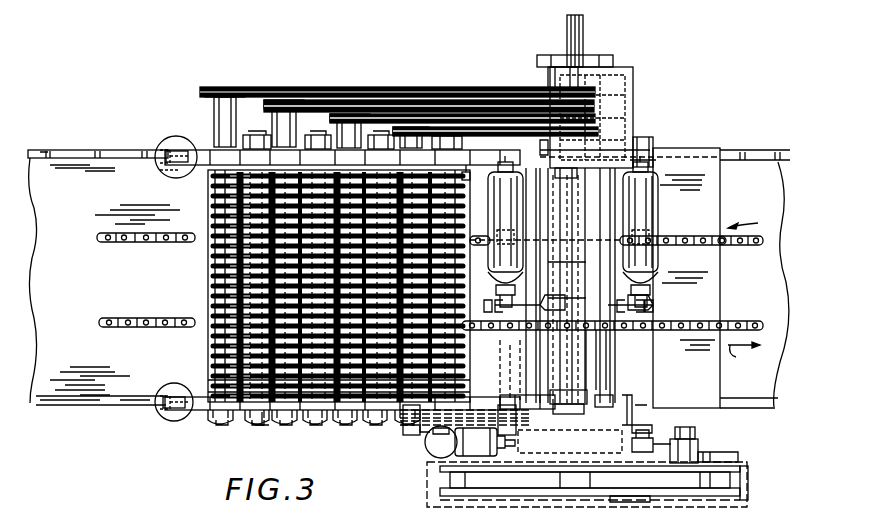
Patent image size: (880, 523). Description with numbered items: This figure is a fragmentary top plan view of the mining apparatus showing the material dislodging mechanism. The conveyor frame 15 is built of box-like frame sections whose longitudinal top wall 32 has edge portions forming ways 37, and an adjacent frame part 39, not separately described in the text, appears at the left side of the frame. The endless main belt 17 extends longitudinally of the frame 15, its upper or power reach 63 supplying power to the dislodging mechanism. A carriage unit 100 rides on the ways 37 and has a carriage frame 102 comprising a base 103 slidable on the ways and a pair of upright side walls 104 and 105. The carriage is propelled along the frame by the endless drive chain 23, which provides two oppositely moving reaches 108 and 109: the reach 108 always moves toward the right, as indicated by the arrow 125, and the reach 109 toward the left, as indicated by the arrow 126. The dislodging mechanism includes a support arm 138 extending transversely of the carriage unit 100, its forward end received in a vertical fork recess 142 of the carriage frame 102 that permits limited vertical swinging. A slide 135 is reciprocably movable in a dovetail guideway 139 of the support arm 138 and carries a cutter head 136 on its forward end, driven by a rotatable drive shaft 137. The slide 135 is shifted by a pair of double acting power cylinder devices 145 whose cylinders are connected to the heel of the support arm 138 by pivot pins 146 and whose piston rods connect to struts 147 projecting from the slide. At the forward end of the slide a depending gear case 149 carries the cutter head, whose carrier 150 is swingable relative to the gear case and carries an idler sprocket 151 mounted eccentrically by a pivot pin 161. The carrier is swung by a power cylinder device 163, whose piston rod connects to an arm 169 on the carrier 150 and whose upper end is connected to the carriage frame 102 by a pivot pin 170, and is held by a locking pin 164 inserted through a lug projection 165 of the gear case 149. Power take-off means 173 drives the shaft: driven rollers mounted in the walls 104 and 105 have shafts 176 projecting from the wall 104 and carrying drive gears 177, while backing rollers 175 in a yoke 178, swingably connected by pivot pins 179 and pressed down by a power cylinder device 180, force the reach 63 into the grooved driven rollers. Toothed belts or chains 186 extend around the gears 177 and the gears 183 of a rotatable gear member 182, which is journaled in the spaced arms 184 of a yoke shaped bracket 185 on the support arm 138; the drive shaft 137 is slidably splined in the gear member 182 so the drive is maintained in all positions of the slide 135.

The conveyor frame 15 is at (80, 152).
The endless main belt 17 is at (203, 346).
The endless drive chain 23 is at (700, 242).
The top wall 32 is at (42, 350).
The ways 37 is at (58, 152).
The conveyor side wall 39 is at (30, 269).
The upper or power reach 63 is at (208, 376).
The carriage unit 100 is at (668, 150).
The carriage frame 102 is at (214, 416).
The base 103 is at (701, 274).
The side wall 104 is at (493, 198).
The side wall 105 is at (458, 408).
The chain reach 108 is at (730, 322).
The chain reach 109 is at (728, 246).
The arrow 125 is at (751, 354).
The arrow 126 is at (751, 221).
The slide 135 is at (604, 378).
The cutter head 136 is at (447, 480).
The drive shaft 137 is at (570, 346).
The support arm 138 is at (608, 346).
The dovetail guideway 139 is at (602, 359).
The fork recess 142 is at (612, 400).
The double acting power cylinder device 145 is at (494, 204).
The pivot pin 146 is at (646, 138).
The strut 147 is at (640, 306).
The gear case 149 is at (610, 430).
The carrier 150 is at (708, 456).
The idler sprocket 151 is at (744, 480).
The pivot pin 161 is at (696, 432).
The double acting power cylinder device 163 is at (436, 450).
The locking pin 164 is at (648, 444).
The lug projection 165 is at (698, 445).
The arm 169 is at (506, 434).
The pivot pin 170 is at (424, 442).
The power take-off means 173 is at (413, 98).
The backing rollers 175 is at (214, 270).
The shafts 176 is at (231, 135).
The drive gears 177 is at (360, 136).
The yoke 178 is at (306, 422).
The pivot pins 179 is at (518, 402).
The power cylinder device 180 is at (180, 147).
The rotatable gear member 182 is at (593, 72).
The gears 183 is at (600, 84).
The arms 184 is at (550, 78).
The yoke shaped bracket 185 is at (612, 102).
The toothed belts or chains 186 is at (462, 98).